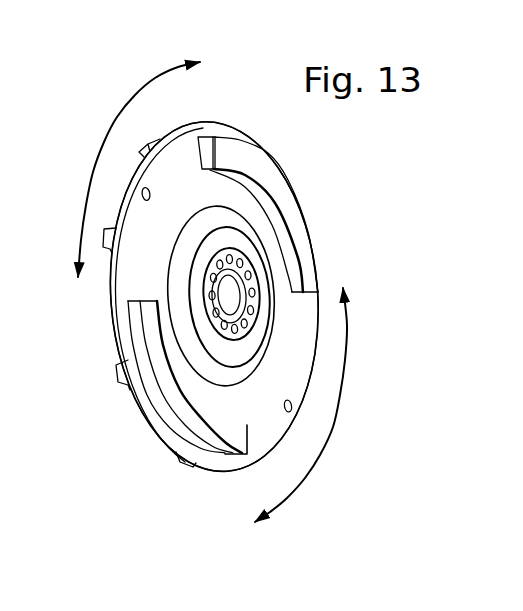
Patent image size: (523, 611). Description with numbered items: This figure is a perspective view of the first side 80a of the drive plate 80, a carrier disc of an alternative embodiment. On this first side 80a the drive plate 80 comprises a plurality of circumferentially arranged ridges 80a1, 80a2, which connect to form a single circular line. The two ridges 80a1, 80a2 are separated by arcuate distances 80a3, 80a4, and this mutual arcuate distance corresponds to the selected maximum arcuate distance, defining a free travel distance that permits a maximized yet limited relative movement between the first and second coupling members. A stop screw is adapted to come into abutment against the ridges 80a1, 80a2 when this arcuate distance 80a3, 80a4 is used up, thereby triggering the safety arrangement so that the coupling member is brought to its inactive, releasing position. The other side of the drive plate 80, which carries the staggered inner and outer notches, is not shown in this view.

The drive plate 80 is at (300, 183).
The first side 80a is at (301, 307).
The ridge 80a1 is at (292, 212).
The ridge 80a2 is at (192, 412).
The arcuate distance 80a3 is at (325, 405).
The arcuate distance 80a4 is at (121, 169).